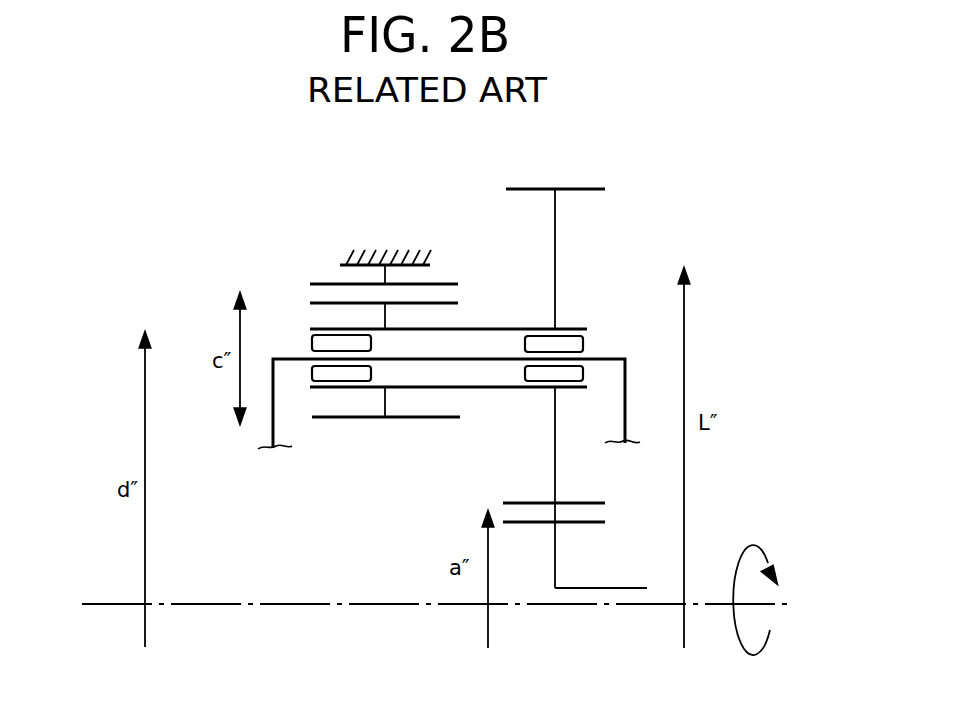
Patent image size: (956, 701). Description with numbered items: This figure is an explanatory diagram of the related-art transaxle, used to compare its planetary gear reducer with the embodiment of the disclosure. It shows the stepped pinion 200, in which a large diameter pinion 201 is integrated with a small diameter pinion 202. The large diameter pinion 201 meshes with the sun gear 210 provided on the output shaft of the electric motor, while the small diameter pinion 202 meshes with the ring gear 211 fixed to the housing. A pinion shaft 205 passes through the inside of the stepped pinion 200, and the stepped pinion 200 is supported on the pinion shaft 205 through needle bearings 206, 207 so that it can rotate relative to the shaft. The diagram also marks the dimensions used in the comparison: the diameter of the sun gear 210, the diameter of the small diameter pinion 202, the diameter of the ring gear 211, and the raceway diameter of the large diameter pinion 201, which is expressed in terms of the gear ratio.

The stepped pinion 200 is at (482, 267).
The large diameter pinion 201 is at (577, 188).
The small diameter pinion 202 is at (355, 422).
The pinion shaft 205 is at (475, 354).
The needle bearing 206 is at (567, 343).
The needle bearing 207 is at (322, 340).
The sun gear 210 is at (583, 527).
The ring gear 211 is at (332, 281).